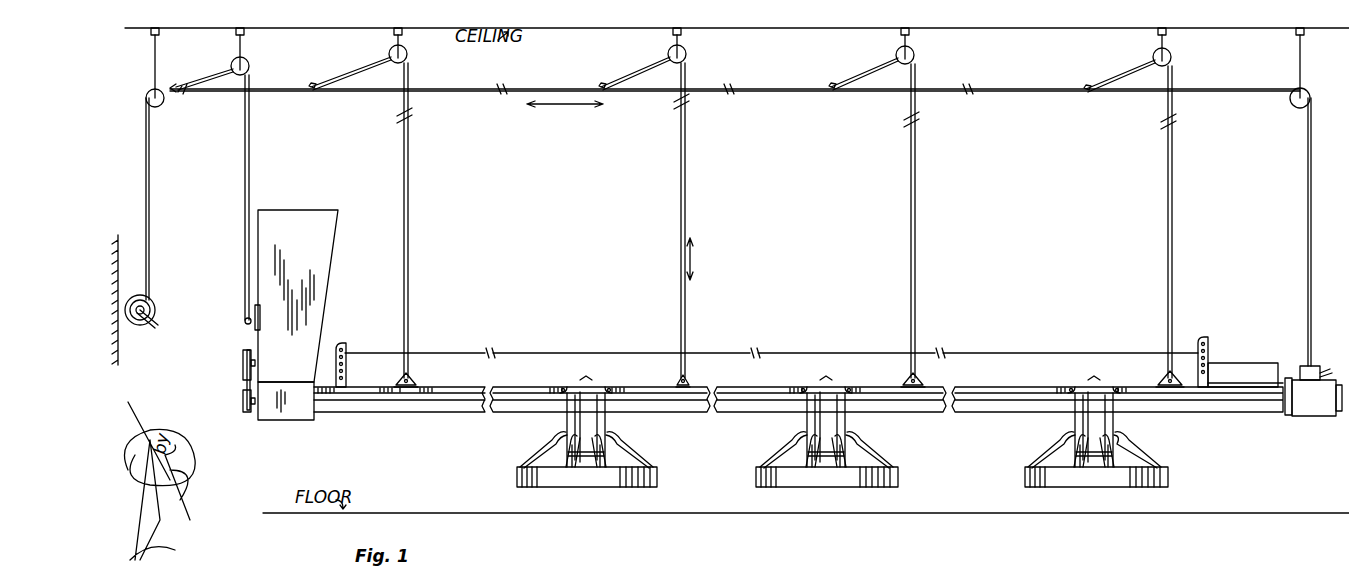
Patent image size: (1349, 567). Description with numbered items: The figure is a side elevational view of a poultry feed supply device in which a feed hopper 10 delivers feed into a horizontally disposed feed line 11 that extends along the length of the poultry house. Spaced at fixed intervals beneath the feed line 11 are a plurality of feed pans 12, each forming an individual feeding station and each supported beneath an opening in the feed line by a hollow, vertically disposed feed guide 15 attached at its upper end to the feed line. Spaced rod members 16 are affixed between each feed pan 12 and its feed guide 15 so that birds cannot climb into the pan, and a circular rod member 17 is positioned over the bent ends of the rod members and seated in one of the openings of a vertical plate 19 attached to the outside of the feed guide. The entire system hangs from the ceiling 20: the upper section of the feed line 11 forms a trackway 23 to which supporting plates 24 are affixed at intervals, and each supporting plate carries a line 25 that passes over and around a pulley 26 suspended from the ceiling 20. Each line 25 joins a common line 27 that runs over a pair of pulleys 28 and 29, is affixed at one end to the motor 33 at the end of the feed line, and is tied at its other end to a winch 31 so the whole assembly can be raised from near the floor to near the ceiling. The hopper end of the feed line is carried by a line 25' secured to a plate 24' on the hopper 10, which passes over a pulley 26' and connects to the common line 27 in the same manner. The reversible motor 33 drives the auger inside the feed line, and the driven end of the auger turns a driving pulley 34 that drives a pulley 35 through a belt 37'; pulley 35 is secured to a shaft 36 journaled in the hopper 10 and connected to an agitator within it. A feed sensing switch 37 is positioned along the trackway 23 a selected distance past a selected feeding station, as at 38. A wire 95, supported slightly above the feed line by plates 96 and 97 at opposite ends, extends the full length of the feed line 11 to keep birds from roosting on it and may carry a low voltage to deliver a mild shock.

The feed hopper 10 is at (323, 207).
The feed line 11 is at (447, 400).
The feed pan 12 is at (598, 474).
The feed guide 15 is at (608, 422).
The rod members 16 is at (618, 445).
The circular rod member 17 is at (568, 450).
The vertical plate 19 is at (612, 458).
The ceiling 20 is at (770, 30).
The trackway 23 is at (517, 390).
The supporting plate 24 is at (800, 347).
The plate 24' is at (471, 346).
The line 25 is at (786, 220).
The line 25' is at (271, 197).
The pulley 26 is at (740, 60).
The pulley 26' is at (235, 59).
The common line 27 is at (468, 92).
The pulley 28 is at (160, 104).
The pulley 29 is at (1295, 106).
The winch 31 is at (160, 305).
The motor 33 is at (1325, 412).
The driving pulley 34 is at (247, 405).
The pulley 35 is at (243, 364).
The shaft 36 is at (262, 367).
The feed sensing switch 37 is at (1243, 355).
The belt 37' is at (221, 381).
The last feeding station location 38 is at (1259, 401).
The wire 95 is at (785, 352).
The plate 96 is at (332, 374).
The plate 97 is at (1210, 343).